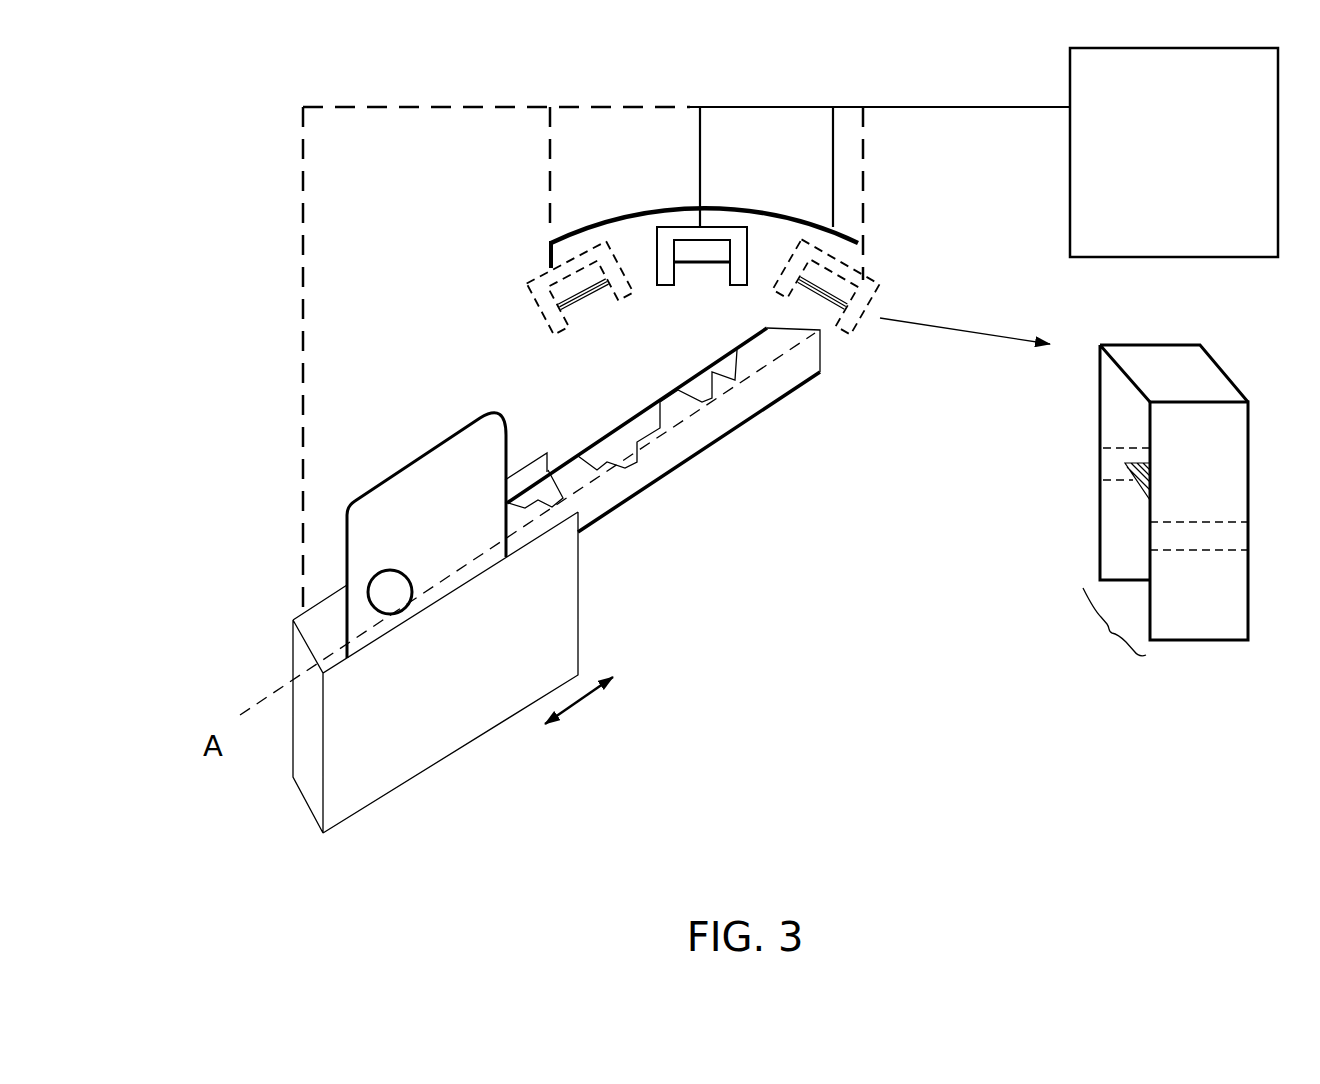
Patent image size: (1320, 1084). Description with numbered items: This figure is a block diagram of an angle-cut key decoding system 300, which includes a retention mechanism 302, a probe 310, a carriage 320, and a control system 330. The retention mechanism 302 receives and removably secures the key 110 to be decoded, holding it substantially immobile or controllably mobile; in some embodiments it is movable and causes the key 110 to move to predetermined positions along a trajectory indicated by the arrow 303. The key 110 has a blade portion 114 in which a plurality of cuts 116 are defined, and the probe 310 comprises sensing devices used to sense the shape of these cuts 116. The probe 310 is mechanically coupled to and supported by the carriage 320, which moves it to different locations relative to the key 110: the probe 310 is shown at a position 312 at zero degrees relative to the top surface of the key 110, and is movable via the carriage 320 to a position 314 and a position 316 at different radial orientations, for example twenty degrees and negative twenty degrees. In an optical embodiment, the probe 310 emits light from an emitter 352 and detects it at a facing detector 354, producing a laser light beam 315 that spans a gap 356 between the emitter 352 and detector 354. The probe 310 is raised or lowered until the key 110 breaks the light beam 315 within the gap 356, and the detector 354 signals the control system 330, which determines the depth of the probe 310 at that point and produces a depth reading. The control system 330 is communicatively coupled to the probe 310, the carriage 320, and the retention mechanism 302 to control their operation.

The key decoding system 300 is at (217, 195).
The retention mechanism 302 is at (290, 655).
The arrow 303 is at (588, 700).
The key 110 is at (405, 463).
The blade portion 114 is at (762, 438).
The cuts 116 is at (652, 448).
The probe 310 is at (640, 253).
The position 312 is at (717, 197).
The position 314 is at (508, 285).
The laser light beam 315 is at (703, 280).
The position 316 is at (893, 270).
The carriage 320 is at (593, 227).
The control system 330 is at (1145, 214).
The emitter 352 is at (1248, 537).
The detector 354 is at (1100, 463).
The gap 356 is at (1087, 631).